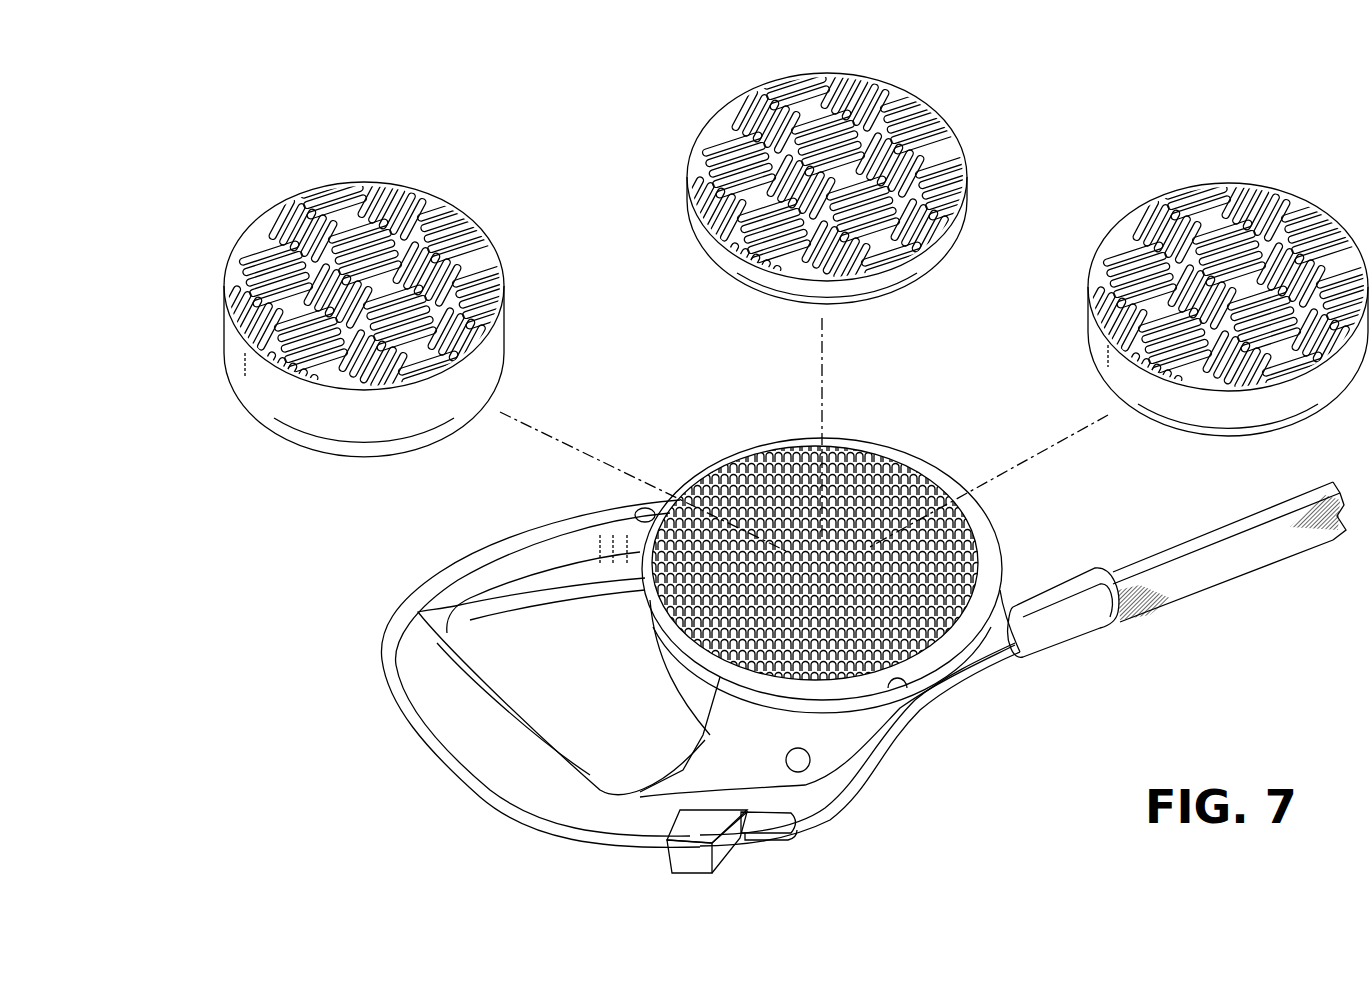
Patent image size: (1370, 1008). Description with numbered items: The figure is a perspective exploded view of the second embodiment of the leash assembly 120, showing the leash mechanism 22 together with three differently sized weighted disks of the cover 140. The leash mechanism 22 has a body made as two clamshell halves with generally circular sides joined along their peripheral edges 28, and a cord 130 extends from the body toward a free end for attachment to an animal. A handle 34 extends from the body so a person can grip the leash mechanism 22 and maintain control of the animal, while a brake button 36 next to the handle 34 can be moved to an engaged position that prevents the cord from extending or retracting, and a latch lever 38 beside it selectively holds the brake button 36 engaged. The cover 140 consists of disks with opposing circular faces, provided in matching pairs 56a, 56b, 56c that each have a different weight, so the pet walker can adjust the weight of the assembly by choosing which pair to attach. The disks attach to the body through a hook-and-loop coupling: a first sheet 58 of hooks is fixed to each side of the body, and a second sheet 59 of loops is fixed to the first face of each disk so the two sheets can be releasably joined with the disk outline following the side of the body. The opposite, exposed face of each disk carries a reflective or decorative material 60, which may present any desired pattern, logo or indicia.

The leash assembly 120 is at (1062, 82).
The leash mechanism 22 is at (405, 577).
The handle 34 is at (485, 745).
The peripheral edges 28 is at (898, 678).
The brake button 36 is at (690, 862).
The latch lever 38 is at (742, 838).
The first sheet 58 is at (983, 552).
The cord 130 is at (1296, 532).
The disk pair 56a is at (222, 293).
The disk pair 56b is at (684, 185).
The disk pair 56c is at (1090, 296).
The cover 140 is at (303, 188).
The reflective and/or decorative material 60 is at (427, 210).
The second sheet 59 is at (303, 448).